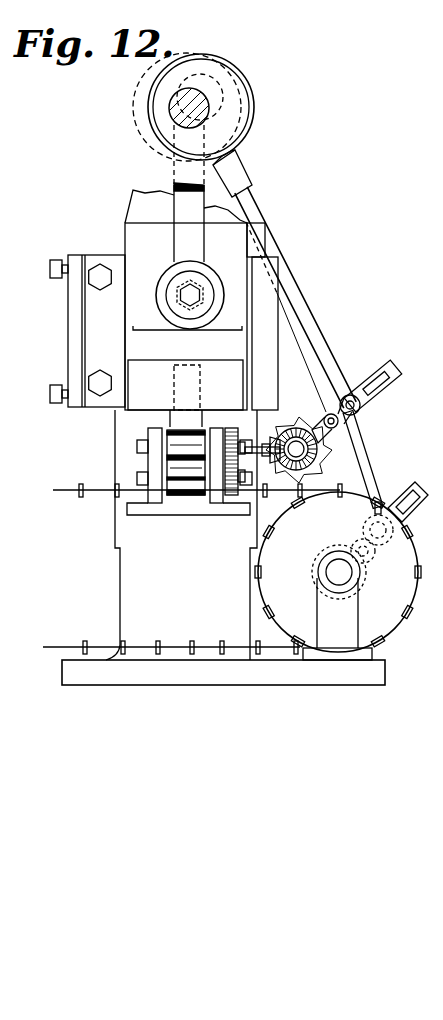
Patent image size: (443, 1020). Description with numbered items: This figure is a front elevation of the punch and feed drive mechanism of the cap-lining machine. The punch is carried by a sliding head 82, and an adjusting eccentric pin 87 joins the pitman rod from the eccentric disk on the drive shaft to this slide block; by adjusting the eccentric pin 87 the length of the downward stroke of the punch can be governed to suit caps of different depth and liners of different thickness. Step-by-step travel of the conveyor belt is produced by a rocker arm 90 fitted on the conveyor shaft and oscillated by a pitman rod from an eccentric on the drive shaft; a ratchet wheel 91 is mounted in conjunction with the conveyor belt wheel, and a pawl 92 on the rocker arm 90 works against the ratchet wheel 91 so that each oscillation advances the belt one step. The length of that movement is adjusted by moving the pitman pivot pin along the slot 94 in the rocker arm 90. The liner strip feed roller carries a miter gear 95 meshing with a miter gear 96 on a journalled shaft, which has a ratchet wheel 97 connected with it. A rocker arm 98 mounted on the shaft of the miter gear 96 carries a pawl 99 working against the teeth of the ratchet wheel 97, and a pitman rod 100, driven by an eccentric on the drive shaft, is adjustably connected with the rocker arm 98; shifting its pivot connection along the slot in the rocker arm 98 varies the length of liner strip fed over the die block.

The sliding head 82 is at (240, 347).
The adjusting eccentric pin 87 is at (164, 300).
The pitman rod 100 is at (296, 291).
The rocker arm 98 is at (361, 403).
The miter gear 95 is at (257, 418).
The miter gear 96 is at (272, 484).
The ratchet wheel 97 is at (292, 428).
The pawl 99 is at (302, 450).
The slot 94 is at (410, 487).
The rocker arm 90 is at (338, 560).
The ratchet wheel 91 is at (312, 559).
The pawl 92 is at (378, 543).